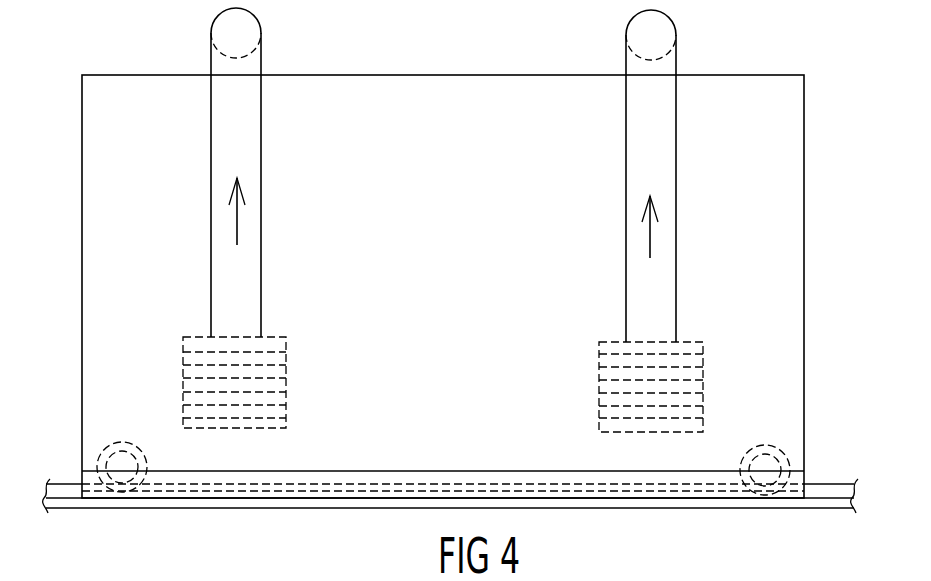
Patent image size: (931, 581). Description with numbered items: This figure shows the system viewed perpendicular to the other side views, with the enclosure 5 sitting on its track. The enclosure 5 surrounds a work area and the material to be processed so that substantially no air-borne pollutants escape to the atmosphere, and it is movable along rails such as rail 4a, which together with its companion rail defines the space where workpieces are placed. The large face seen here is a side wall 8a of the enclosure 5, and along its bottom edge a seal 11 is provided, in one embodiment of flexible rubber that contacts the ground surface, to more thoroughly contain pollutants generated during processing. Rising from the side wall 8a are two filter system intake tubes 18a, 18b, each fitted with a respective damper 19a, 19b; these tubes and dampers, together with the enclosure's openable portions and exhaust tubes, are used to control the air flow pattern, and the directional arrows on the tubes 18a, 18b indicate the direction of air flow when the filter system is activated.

The side wall 8a is at (462, 251).
The filter system intake tube 18a is at (254, 134).
The filter system intake tube 18b is at (669, 135).
The damper 19a is at (208, 392).
The damper 19b is at (612, 394).
The seal 11 is at (410, 482).
The enclosure 5 is at (288, 517).
The rail 4a is at (782, 498).